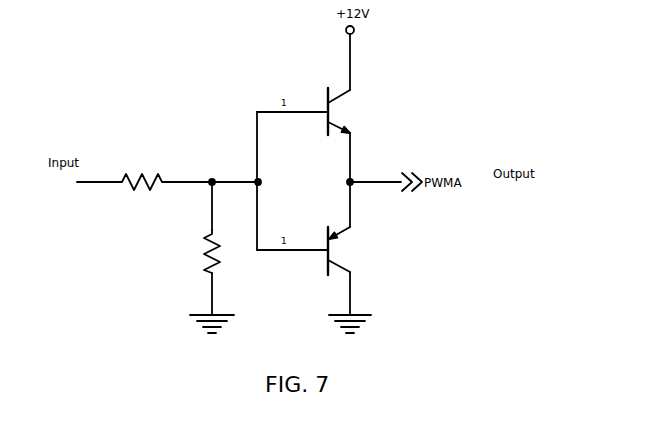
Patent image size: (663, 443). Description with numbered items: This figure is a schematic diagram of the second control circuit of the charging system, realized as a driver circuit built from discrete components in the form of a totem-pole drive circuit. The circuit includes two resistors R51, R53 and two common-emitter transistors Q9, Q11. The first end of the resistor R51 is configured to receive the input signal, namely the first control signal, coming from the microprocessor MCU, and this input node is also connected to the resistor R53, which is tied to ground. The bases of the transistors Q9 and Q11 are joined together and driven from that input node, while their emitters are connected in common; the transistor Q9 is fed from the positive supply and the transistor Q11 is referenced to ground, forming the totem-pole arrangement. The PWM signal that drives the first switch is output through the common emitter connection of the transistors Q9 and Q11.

The resistor R51 is at (141, 174).
The resistor R53 is at (223, 251).
The common-emitter transistor Q9 is at (351, 111).
The common-emitter transistor Q11 is at (355, 251).